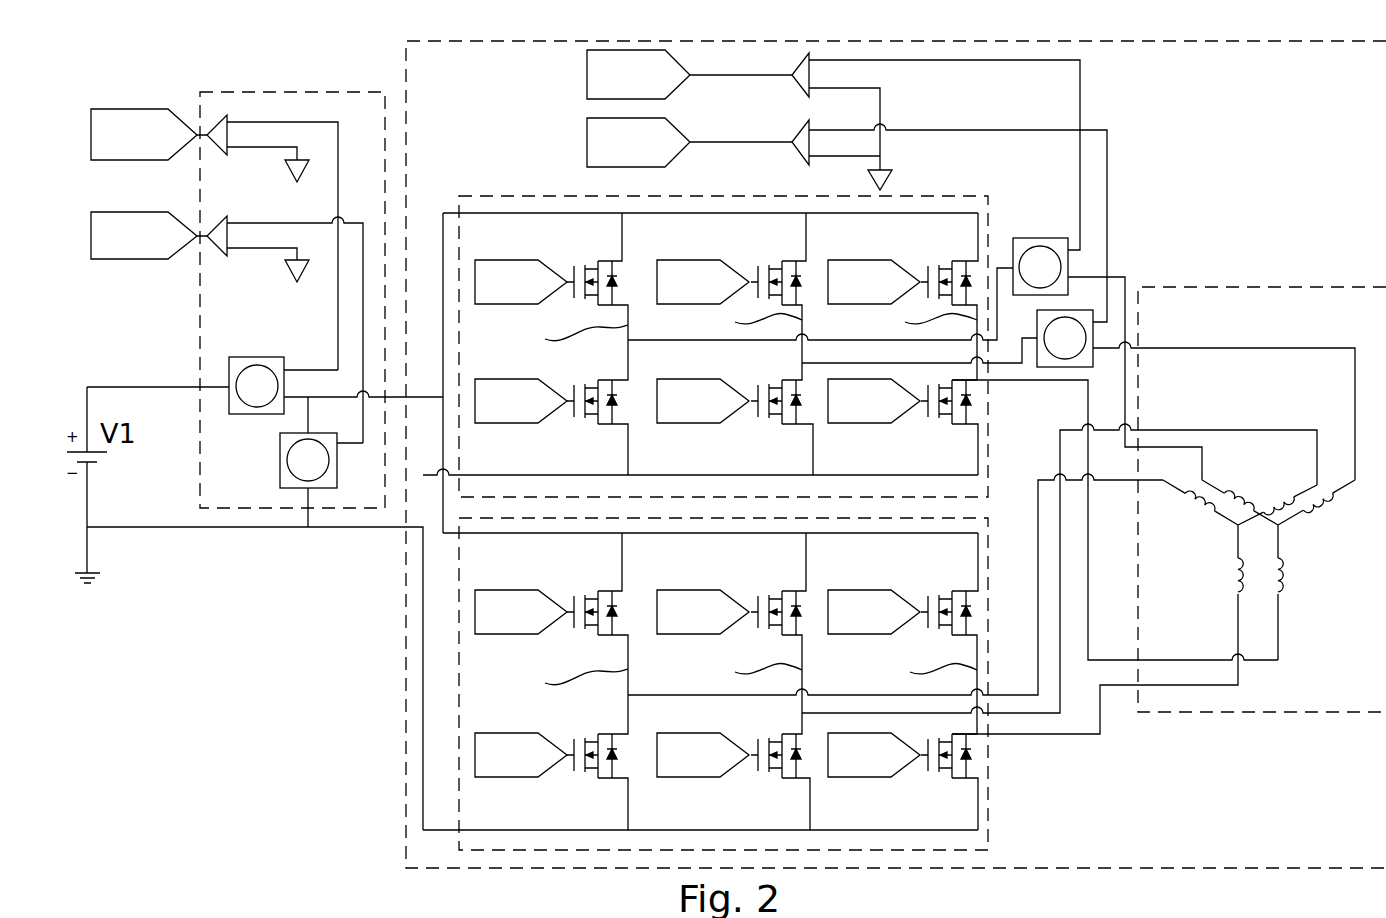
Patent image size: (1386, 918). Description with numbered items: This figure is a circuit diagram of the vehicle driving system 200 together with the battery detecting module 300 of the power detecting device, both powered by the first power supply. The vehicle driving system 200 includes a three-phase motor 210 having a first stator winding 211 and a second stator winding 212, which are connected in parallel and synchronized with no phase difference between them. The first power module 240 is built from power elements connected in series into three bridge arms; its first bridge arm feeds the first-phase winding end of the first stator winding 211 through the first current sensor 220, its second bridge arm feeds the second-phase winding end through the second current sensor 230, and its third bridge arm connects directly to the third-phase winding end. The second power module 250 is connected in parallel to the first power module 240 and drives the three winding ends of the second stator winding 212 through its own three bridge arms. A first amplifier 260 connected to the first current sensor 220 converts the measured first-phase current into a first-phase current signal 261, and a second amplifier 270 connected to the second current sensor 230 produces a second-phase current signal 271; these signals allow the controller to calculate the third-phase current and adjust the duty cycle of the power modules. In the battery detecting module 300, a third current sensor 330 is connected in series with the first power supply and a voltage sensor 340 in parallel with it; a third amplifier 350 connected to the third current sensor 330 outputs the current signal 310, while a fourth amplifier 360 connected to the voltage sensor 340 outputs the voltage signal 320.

The vehicle driving system 200 is at (673, 37).
The three-phase motor 210 is at (1262, 288).
The first stator winding 211 is at (1310, 530).
The second stator winding 212 is at (1210, 530).
The first current sensor 220 is at (1048, 237).
The second current sensor 230 is at (1082, 310).
The first power module 240 is at (521, 192).
The second power module 250 is at (990, 816).
The first amplifier 260 is at (895, 72).
The first-phase current signal 261 is at (689, 74).
The second amplifier 270 is at (908, 148).
The second-phase current signal 271 is at (689, 142).
The battery detecting module 300 is at (237, 90).
The current signal 310 is at (149, 134).
The voltage signal 320 is at (149, 235).
The third current sensor 330 is at (242, 416).
The voltage sensor 340 is at (276, 484).
The third amplifier 350 is at (264, 134).
The fourth amplifier 360 is at (276, 236).